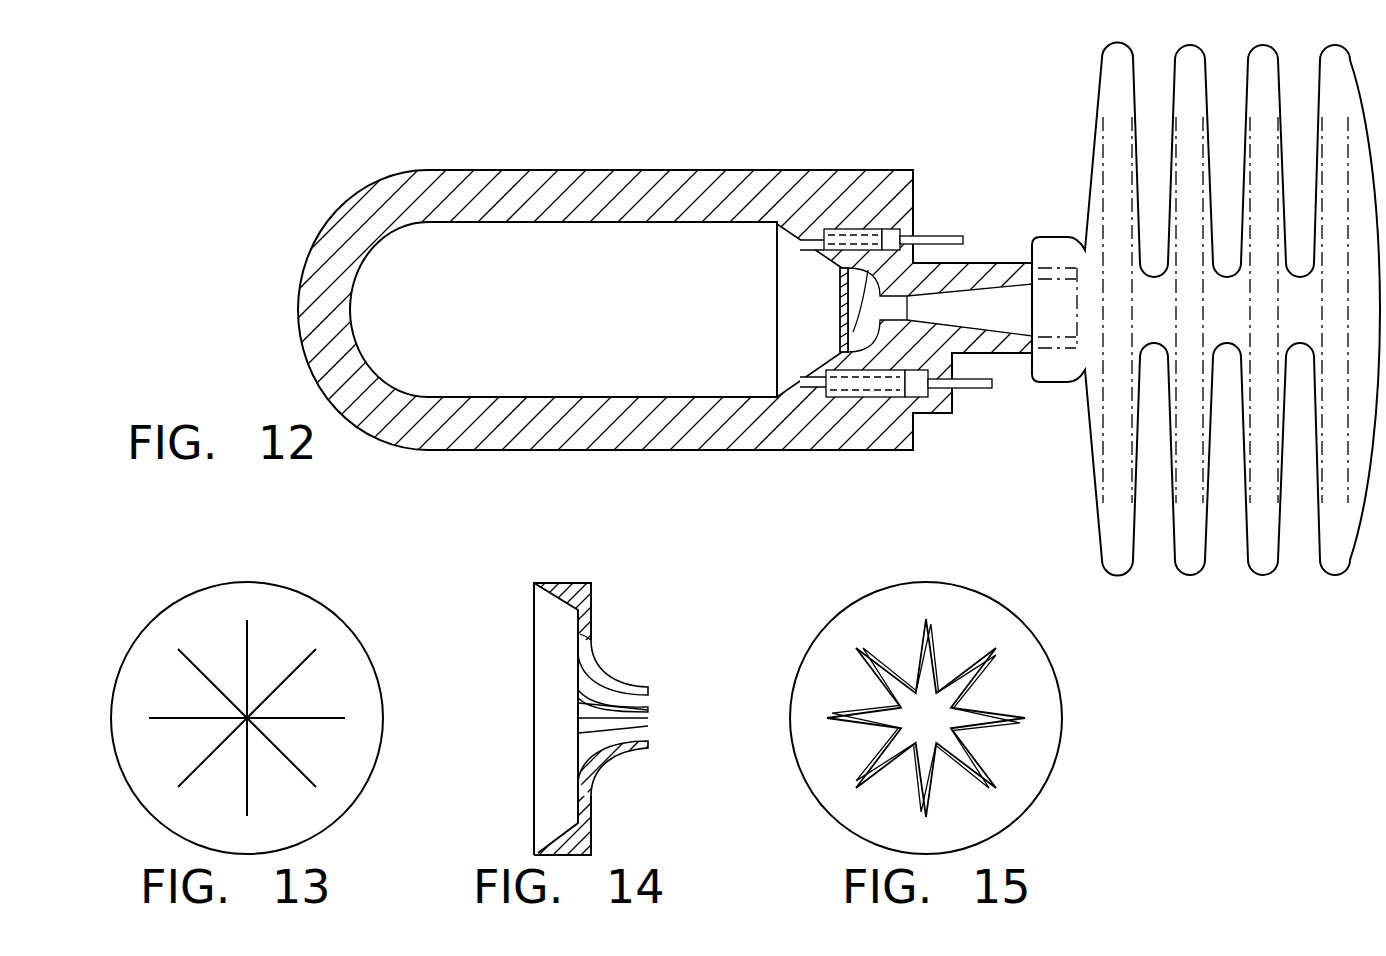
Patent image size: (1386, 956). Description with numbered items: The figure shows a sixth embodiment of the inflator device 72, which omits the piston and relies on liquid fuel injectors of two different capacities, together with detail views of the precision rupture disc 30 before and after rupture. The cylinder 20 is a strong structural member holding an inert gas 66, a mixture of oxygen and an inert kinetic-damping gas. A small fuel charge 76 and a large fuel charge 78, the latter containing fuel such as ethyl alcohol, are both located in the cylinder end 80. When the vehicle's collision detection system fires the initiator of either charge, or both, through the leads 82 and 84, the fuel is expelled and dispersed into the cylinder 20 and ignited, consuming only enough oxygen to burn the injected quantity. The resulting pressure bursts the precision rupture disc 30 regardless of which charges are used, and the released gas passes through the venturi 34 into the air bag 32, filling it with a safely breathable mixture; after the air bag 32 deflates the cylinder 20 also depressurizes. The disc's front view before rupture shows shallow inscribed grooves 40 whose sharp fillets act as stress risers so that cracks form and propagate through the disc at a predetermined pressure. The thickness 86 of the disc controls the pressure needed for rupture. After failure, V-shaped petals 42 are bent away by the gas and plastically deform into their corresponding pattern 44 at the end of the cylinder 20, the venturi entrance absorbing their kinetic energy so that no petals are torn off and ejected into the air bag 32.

In FIG. 12, the device 72 is at (598, 100).
In FIG. 12, the cylinder 20 is at (477, 176).
In FIG. 12, the inert gas 66 is at (645, 240).
In FIG. 12, the cylinder end 80 is at (842, 322).
In FIG. 12, the precision rupture disc 30 is at (840, 300).
In FIG. 13, the precision rupture disc 30 is at (340, 748).
In FIG. 14, the precision rupture disc 30 is at (550, 700).
In FIG. 15, the precision rupture disc 30 is at (1030, 745).
In FIG. 12, the venturi 34 is at (1012, 308).
In FIG. 12, the small fuel charge 76 is at (860, 236).
In FIG. 12, the large fuel charge 78 is at (883, 388).
In FIG. 12, the lead 82 is at (945, 242).
In FIG. 12, the lead 84 is at (977, 386).
In FIG. 12, the air bag 32 is at (1095, 128).
In FIG. 13, the inscribed grooves 40 is at (293, 716).
In FIG. 14, the petals 42 is at (618, 670).
In FIG. 15, the petals 42 is at (878, 698).
In FIG. 15, the pattern 44 is at (978, 675).
In FIG. 14, the thickness 86 is at (588, 633).